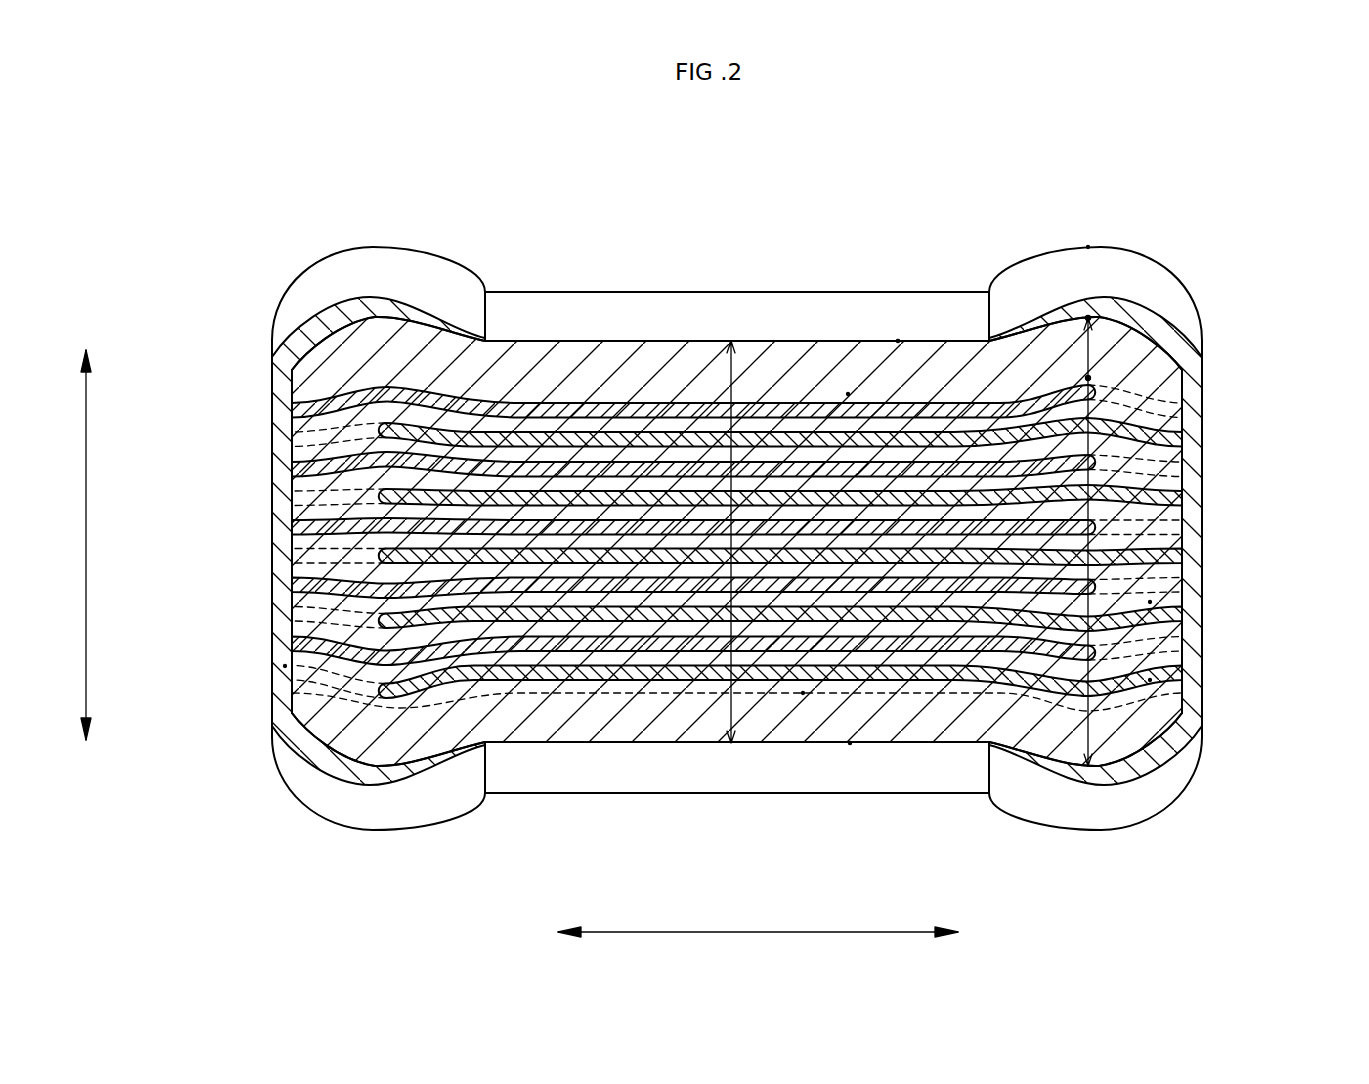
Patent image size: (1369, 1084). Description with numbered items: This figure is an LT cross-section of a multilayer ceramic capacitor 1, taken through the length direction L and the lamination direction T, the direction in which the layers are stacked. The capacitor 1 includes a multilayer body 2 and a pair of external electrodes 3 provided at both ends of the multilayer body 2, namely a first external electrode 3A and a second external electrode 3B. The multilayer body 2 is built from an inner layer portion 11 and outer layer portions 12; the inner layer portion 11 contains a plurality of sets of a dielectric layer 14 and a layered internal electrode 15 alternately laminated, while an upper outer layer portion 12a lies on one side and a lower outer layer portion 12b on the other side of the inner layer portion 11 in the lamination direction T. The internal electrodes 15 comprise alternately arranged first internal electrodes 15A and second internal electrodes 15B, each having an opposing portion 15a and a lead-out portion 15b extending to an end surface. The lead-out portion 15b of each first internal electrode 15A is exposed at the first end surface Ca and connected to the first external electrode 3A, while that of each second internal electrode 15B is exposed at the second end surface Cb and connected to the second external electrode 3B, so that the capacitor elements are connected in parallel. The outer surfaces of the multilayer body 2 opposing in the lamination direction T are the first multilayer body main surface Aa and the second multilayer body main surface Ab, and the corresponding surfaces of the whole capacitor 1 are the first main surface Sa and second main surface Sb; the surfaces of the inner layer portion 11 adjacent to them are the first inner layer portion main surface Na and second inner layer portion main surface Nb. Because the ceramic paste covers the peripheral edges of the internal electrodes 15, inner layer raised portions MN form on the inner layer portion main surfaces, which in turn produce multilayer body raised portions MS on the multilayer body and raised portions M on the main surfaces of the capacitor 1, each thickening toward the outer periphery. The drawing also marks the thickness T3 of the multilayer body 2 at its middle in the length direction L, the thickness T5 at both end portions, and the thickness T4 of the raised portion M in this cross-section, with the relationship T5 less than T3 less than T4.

The multilayer ceramic capacitor 1 is at (1000, 152).
The multilayer body 2 is at (614, 322).
The external electrodes 3 is at (743, 493).
The first external electrode 3A is at (375, 265).
The second external electrode 3B is at (1110, 268).
The inner layer portion 11 is at (292, 693).
The outer layer portion 12 is at (641, 541).
The upper outer layer portion 12a is at (298, 380).
The lower outer layer portion 12b is at (295, 705).
The dielectric layer 14 is at (330, 484).
The internal electrode 15 is at (203, 432).
The first internal electrode 15A is at (644, 525).
The second internal electrode 15B is at (687, 558).
The opposing portion 15a is at (300, 590).
The lead-out portion 15b is at (350, 556).
The raised portion M is at (1088, 247).
The multilayer body raised portion MS is at (1090, 318).
The inner layer raised portion MN is at (1090, 378).
The first inner layer portion main surface Na is at (848, 392).
The second inner layer portion main surface Nb is at (803, 694).
The first multilayer body main surface Aa is at (898, 340).
The second multilayer body main surface Ab is at (850, 745).
The first main surface Sa is at (920, 278).
The second main surface Sb is at (882, 821).
The lamination direction T is at (78, 545).
The thickness at middle portion T3 is at (727, 705).
The thickness of raised portion in LT cross-section T4 is at (1150, 602).
The thickness at end portions T5 is at (1150, 407).
The first end surface Ca is at (285, 666).
The second end surface Cb is at (1150, 680).
The length direction L is at (758, 947).